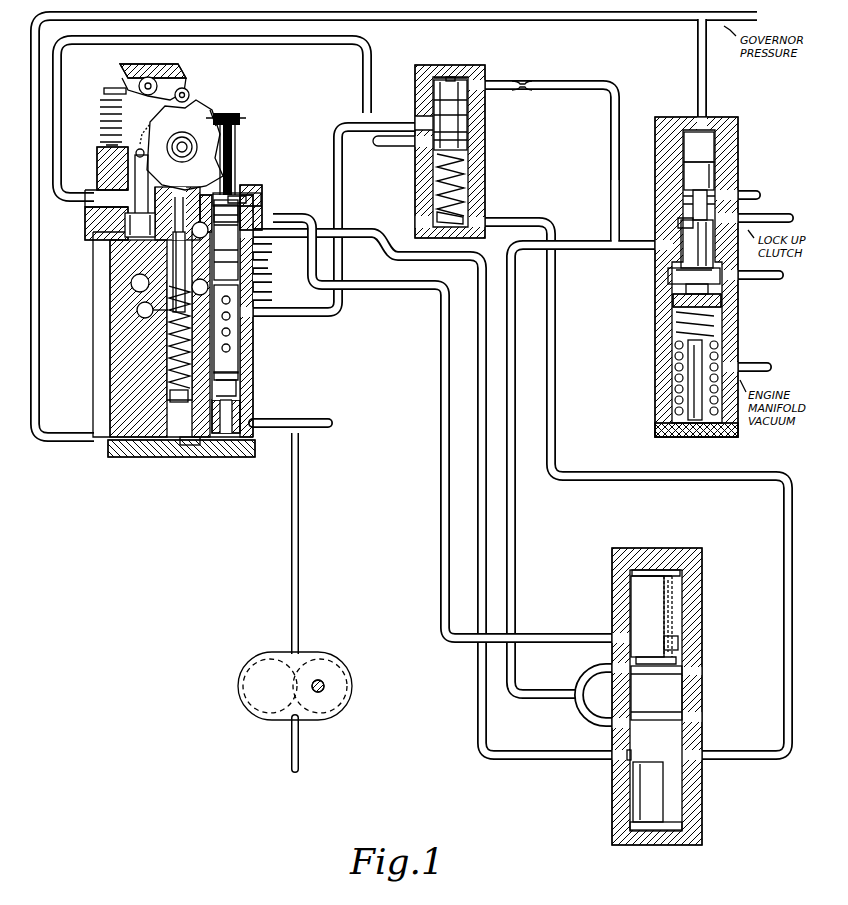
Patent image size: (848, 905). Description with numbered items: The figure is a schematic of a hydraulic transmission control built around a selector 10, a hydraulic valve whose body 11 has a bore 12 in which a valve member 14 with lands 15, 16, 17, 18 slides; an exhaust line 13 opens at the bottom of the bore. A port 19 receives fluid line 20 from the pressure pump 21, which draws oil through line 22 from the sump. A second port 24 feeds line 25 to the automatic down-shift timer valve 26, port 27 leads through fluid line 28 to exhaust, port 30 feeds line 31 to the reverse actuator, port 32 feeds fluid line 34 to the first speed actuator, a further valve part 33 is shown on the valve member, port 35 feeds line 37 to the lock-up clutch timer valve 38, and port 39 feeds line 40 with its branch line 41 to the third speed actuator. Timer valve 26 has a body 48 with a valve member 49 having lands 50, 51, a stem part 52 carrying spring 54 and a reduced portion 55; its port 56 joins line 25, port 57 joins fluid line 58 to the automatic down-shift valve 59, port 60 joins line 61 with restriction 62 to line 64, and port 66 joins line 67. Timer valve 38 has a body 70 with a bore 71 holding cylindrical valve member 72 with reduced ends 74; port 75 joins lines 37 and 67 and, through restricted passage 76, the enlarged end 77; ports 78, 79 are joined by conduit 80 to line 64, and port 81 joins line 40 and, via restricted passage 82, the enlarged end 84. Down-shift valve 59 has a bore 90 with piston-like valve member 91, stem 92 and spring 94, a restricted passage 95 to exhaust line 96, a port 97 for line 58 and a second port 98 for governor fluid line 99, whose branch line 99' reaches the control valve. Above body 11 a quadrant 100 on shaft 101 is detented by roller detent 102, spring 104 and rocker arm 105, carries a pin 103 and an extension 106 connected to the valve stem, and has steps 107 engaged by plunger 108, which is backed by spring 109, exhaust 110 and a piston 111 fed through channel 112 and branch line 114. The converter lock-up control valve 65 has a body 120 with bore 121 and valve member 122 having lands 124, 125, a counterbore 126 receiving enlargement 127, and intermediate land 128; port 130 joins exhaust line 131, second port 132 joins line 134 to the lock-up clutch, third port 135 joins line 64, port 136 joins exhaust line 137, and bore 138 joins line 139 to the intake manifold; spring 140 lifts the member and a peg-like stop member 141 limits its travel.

The selector 10 is at (262, 341).
The body 11 is at (242, 412).
The bore 12 is at (232, 436).
The exhaust line 13 is at (308, 418).
The valve member 14 is at (236, 140).
The land 15 is at (242, 380).
The land 16 is at (248, 296).
The land 17 is at (262, 192).
The land 18 is at (250, 192).
The port 19 is at (242, 364).
The fluid line 20 is at (300, 536).
The pressure pump 21 is at (256, 700).
The line 22 is at (300, 752).
The second port 24 is at (256, 314).
The line 25 is at (338, 316).
The automatic down-shift timer valve 26 is at (418, 64).
The port 27 is at (272, 278).
The fluid line 28 is at (310, 282).
The port 30 is at (256, 262).
The line 31 is at (222, 232).
The port 32 is at (230, 250).
The piston 33 is at (224, 286).
The fluid line 34 is at (272, 248).
The port 35 is at (280, 216).
The line 37 is at (390, 256).
The lock-up clutch timer valve 38 is at (604, 835).
The port 39 is at (256, 194).
The line 40 is at (334, 205).
The branch line 41 is at (336, 200).
The body 48 is at (484, 176).
The valve member 49 is at (458, 118).
The land 50 is at (462, 140).
The land 51 is at (436, 82).
The stem part 52 is at (440, 184).
The spring 54 is at (438, 216).
The portion of reduced diameter 55 is at (452, 76).
The port 56 is at (430, 124).
The port 57 is at (412, 146).
The fluid line 58 is at (320, 46).
The automatic down-shift valve 59 is at (118, 368).
The port 60 is at (480, 88).
The line 61 is at (586, 82).
The restriction 62 is at (520, 80).
The line 64 is at (588, 241).
The converter lock-up control valve 65 is at (648, 354).
The port 66 is at (488, 224).
The line 67 is at (550, 222).
The body 70 is at (684, 716).
The bore 71 is at (672, 694).
The cylindrical valve member 72 is at (640, 602).
The reduced-diameter ends 74 is at (652, 570).
The port 75 is at (686, 758).
The restricted passage 76 is at (636, 792).
The enlarged end of bore 77 is at (680, 826).
The port 78 is at (616, 724).
The port 79 is at (684, 670).
The conduit 80 is at (580, 680).
The port 81 is at (682, 636).
The restricted passage 82 is at (676, 606).
The enlarged end of bore 84 is at (634, 574).
The bore 90 is at (112, 208).
The piston-like valve member 91 is at (186, 218).
The stem 92 is at (110, 168).
The spring 94 is at (132, 280).
The restricted passage 95 is at (184, 296).
The exhaust line 96 is at (138, 308).
The port 97 is at (128, 240).
The second port 98 is at (112, 196).
The fluid line 99 is at (396, 226).
The branch line 99' is at (676, 73).
The quadrant 100 is at (196, 118).
The shaft 101 is at (184, 162).
The roller detent 102 is at (186, 90).
The pin 103 is at (140, 148).
The spring 104 is at (100, 98).
The rocker arm 105 is at (116, 78).
The extension 106 is at (212, 114).
The steps 107 is at (233, 160).
The plunger 108 is at (190, 388).
The spring 109 is at (170, 382).
The exhaust 110 is at (170, 318).
The piston 111 is at (186, 446).
The channel 112 is at (150, 456).
The branch line 114 is at (92, 440).
The body 120 is at (672, 426).
The bore 121 is at (708, 142).
The valve member 122 is at (694, 200).
The land 124 is at (678, 274).
The land 125 is at (688, 166).
The counterbore 126 is at (676, 378).
The enlargement 127 is at (674, 298).
The intermediate land 128 is at (688, 288).
The port 130 is at (692, 196).
The exhaust line 131 is at (744, 190).
The second port 132 is at (680, 222).
The line 134 is at (772, 216).
The third port 135 is at (690, 248).
The port 136 is at (716, 286).
The exhaust line 137 is at (772, 280).
The bore 138 is at (726, 362).
The line 139 is at (762, 364).
The spring 140 is at (686, 396).
The peg-like stop member 141 is at (694, 425).